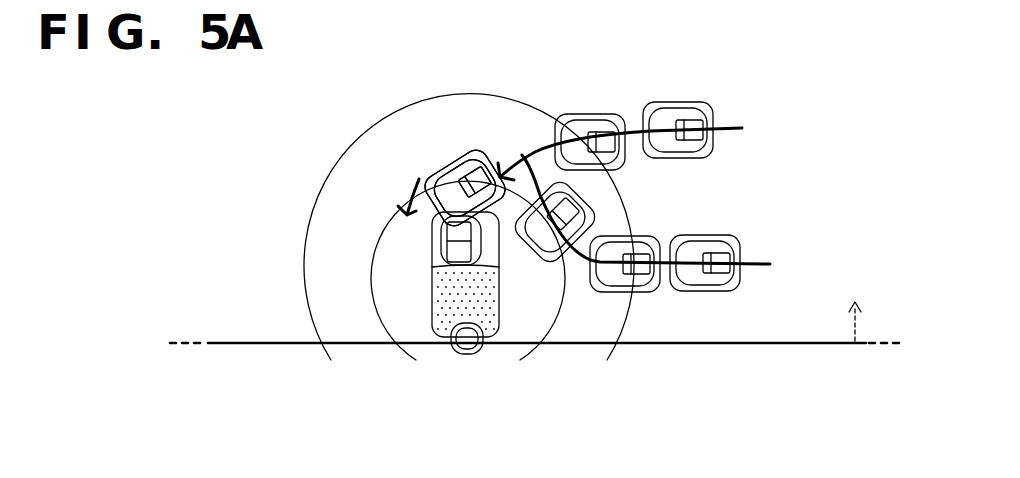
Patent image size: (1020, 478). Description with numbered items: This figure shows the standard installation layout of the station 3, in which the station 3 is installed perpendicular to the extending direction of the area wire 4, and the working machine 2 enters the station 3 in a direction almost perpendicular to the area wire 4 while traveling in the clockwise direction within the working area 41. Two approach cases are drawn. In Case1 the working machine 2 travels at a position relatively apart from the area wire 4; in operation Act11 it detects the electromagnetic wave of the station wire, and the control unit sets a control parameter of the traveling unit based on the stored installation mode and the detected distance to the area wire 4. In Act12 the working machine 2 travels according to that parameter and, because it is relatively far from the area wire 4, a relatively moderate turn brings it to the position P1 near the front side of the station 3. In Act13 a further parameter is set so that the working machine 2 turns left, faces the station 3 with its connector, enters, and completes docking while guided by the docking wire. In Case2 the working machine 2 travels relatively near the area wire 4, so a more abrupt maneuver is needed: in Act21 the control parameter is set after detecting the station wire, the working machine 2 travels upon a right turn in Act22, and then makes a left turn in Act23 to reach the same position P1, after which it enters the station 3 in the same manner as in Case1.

The working machine 2 is at (688, 103).
The station 3 is at (455, 356).
The area wire 4 is at (758, 346).
The working area 41 is at (906, 320).
The position P1 is at (443, 173).
The operation Act11 is at (592, 135).
The operation Act12 is at (548, 162).
The operation Act13 is at (425, 190).
The operation Act21 is at (650, 255).
The operation Act22 is at (578, 258).
The operation Act23 is at (503, 160).
The case Case1 is at (655, 146).
The case Case2 is at (684, 212).